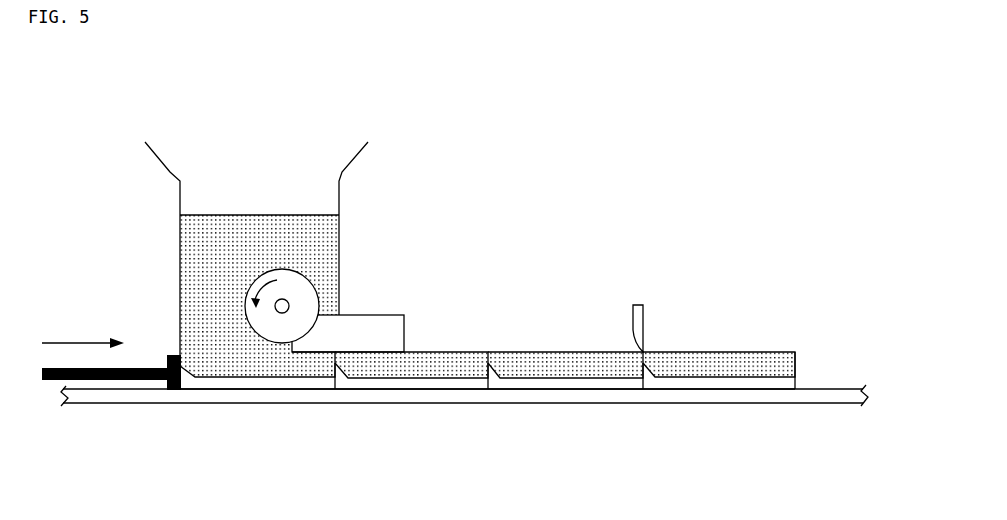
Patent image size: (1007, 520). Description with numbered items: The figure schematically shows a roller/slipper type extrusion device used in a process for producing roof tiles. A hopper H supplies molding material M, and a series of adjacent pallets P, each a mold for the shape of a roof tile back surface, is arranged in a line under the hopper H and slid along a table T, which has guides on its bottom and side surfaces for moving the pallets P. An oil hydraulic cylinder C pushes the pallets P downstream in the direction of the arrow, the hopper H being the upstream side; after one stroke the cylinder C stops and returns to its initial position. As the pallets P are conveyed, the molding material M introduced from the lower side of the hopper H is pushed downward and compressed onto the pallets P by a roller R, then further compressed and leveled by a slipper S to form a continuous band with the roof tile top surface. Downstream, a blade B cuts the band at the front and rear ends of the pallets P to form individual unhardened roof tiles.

The hopper H is at (170, 172).
The molding material M is at (237, 226).
The roller R is at (308, 307).
The slipper S is at (404, 327).
The blade B is at (640, 322).
The oil hydraulic cylinder C is at (145, 367).
The table T is at (178, 393).
The pallets P is at (293, 379).